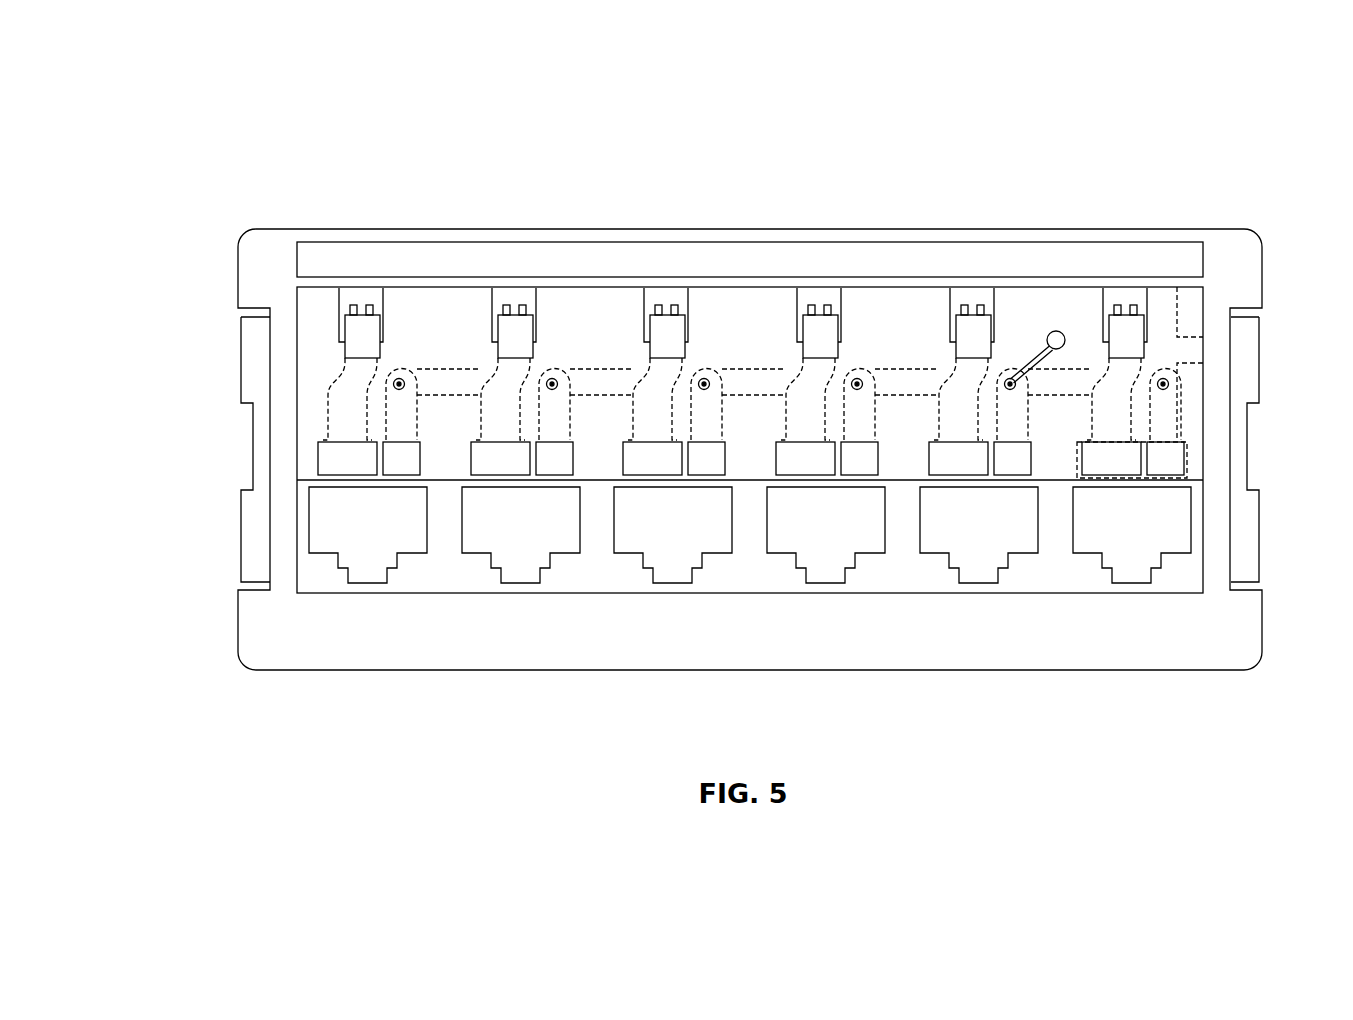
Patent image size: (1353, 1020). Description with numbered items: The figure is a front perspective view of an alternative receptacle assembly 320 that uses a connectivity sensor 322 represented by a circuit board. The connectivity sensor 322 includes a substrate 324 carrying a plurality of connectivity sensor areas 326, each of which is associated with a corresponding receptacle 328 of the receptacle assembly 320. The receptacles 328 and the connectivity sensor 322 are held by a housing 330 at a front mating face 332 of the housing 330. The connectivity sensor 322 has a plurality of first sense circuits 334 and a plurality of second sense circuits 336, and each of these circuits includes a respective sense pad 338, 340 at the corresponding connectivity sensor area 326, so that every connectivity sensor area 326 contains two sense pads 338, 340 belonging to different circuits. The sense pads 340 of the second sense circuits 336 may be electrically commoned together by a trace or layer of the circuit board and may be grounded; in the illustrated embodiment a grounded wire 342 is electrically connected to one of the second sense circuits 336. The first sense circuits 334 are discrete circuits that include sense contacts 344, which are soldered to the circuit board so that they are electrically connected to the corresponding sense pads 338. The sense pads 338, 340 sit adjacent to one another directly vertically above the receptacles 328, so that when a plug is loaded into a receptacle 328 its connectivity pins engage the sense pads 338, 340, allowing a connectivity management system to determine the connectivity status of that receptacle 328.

The receptacle assembly 320 is at (216, 134).
The connectivity sensor 322 is at (1190, 353).
The substrate 324 is at (1075, 312).
The connectivity sensor area 326 is at (1172, 460).
The receptacle 328 is at (1133, 572).
The housing 330 is at (1225, 652).
The front mating face 332 is at (1248, 621).
The first sense circuit 334 is at (331, 419).
The second sense circuit 336 is at (395, 402).
The sense pad 338 is at (338, 465).
The sense pad 340 is at (401, 465).
The grounded wire 342 is at (1032, 328).
The sense contact 344 is at (358, 330).